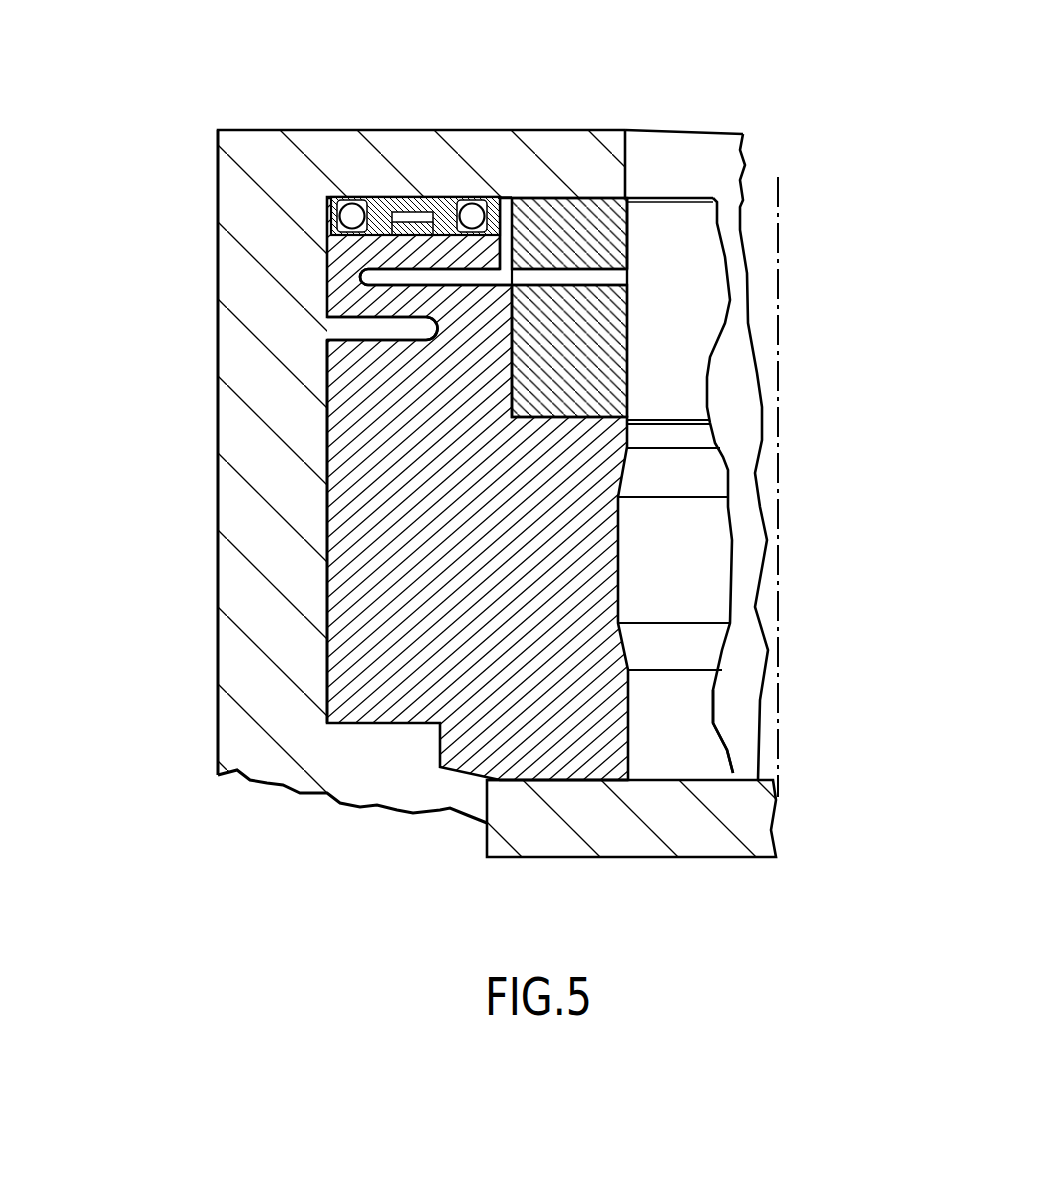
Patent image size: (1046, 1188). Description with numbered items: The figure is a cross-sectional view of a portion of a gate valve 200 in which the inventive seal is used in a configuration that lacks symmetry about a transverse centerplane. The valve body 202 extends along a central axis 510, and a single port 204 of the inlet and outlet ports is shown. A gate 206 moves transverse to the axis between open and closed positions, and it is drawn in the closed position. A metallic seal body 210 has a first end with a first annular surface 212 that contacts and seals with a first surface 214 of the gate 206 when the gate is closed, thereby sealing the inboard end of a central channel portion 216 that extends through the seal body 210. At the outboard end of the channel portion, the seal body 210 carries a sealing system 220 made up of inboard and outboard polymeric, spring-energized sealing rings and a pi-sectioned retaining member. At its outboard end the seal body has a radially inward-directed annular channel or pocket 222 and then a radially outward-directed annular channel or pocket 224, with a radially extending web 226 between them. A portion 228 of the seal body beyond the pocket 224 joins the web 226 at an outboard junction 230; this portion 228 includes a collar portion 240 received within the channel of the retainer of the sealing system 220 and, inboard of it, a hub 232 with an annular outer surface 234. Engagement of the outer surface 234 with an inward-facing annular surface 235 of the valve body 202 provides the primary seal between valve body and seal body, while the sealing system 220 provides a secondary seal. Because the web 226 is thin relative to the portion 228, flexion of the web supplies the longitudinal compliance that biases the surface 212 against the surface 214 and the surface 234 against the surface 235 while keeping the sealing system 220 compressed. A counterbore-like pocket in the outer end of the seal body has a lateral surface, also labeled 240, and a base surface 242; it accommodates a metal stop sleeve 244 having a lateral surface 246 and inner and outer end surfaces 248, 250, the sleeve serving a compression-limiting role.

The gate valve 200 is at (185, 156).
The valve body 202 is at (227, 650).
The port 204 is at (720, 140).
The gate 206 is at (638, 843).
The metallic seal body 210 is at (347, 567).
The first annular surface 212 is at (563, 780).
The first surface 214 is at (710, 780).
The central channel portion 216 is at (712, 588).
The sealing system 220 is at (405, 190).
The radially inward-directed annular channel 222 is at (345, 329).
The radially outward-directed annular channel 224 is at (400, 277).
The radially extending web 226 is at (337, 413).
The seal body portion 228 is at (398, 257).
The outboard junction 230 is at (336, 286).
The hub 232 is at (522, 205).
The annular outer surface 234 is at (495, 197).
The inward-facing annular surface 235 is at (624, 218).
The collar portion 240 is at (398, 238).
The base surface 242 is at (605, 410).
The metal stop sleeve 244 is at (628, 272).
The lateral surface 246 is at (513, 348).
The inner end surface 248 is at (622, 443).
The outer end surface 250 is at (592, 197).
The central axis 510 is at (778, 218).